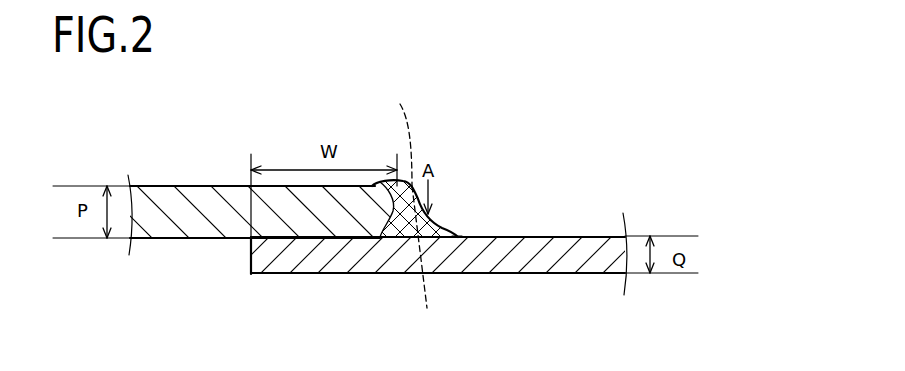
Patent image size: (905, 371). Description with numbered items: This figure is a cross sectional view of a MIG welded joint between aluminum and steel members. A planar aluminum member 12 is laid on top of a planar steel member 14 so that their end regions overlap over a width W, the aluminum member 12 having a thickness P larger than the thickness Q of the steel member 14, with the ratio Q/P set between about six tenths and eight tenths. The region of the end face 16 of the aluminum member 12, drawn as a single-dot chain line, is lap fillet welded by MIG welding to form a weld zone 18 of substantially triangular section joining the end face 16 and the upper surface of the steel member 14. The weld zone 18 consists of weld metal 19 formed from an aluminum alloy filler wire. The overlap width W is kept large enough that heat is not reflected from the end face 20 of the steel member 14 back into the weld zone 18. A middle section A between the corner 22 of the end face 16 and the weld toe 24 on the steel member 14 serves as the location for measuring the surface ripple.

The aluminum member 12 is at (183, 171).
The steel member 14 is at (488, 287).
The end face 16 is at (395, 136).
The weld zone 18 is at (447, 173).
The weld metal 19 is at (404, 204).
The end face 20 is at (251, 262).
The corner 22 is at (426, 261).
The weld toe 24 is at (457, 235).